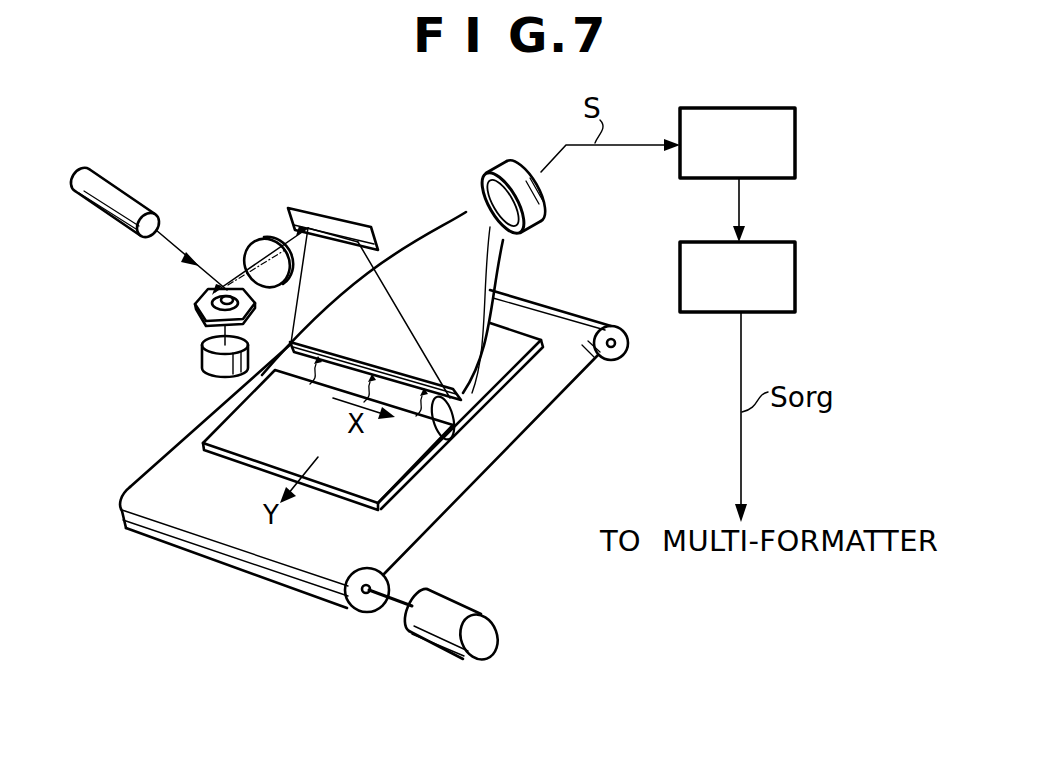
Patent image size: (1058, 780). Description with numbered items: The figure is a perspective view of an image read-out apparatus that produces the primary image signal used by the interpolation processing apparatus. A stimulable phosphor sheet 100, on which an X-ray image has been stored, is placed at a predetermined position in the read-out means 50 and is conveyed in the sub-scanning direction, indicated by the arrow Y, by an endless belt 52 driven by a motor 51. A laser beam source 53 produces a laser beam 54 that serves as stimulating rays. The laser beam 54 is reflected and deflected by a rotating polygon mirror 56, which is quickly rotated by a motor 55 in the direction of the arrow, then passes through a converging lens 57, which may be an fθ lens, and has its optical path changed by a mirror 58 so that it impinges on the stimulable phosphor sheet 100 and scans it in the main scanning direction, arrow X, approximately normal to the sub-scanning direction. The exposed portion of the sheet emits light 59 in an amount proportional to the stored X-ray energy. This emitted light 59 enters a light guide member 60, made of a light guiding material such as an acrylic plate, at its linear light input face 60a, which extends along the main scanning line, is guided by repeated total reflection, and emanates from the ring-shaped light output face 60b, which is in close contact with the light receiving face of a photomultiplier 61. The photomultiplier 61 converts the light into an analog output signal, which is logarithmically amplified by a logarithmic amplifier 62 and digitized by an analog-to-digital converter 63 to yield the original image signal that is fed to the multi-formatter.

The read-out means 50 is at (324, 184).
The motor 51 is at (455, 605).
The endless belt 52 is at (375, 531).
The laser beam source 53 is at (135, 196).
The laser beam 54 is at (173, 245).
The motor 55 is at (203, 362).
The rotating polygon mirror 56 is at (193, 303).
The converging lens 57 is at (262, 238).
The mirror 58 is at (354, 224).
The emitted light 59 is at (310, 372).
The light guide member 60 is at (442, 323).
The linear light input face 60a is at (452, 440).
The ring-shaped light output face 60b is at (507, 250).
The photomultiplier 61 is at (492, 172).
The logarithmic amplifier 62 is at (758, 108).
The analog-to-digital converter 63 is at (773, 242).
The stimulable phosphor sheet 100 is at (395, 467).